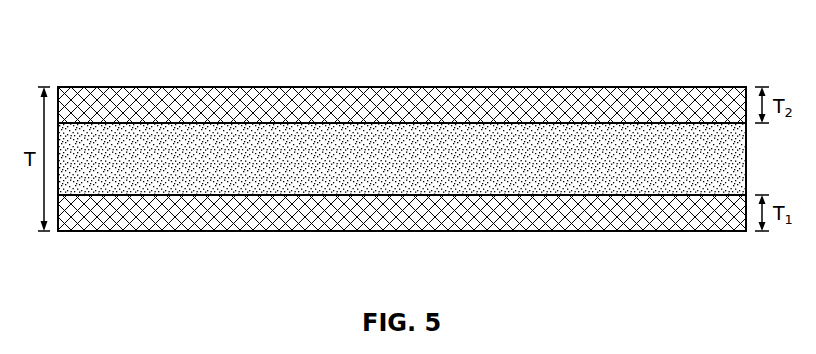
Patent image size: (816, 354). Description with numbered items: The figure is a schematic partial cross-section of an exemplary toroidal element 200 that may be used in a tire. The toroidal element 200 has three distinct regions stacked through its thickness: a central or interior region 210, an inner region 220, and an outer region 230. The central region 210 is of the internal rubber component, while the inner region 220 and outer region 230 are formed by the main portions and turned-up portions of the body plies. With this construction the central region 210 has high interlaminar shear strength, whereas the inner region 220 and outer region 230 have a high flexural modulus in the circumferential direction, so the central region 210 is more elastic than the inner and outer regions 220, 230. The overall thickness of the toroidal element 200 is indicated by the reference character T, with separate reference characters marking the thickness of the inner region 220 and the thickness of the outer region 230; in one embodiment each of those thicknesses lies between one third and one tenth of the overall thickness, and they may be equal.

The toroidal element 200 is at (601, 58).
The central region 210 is at (315, 132).
The inner region 220 is at (523, 215).
The outer region 230 is at (420, 103).